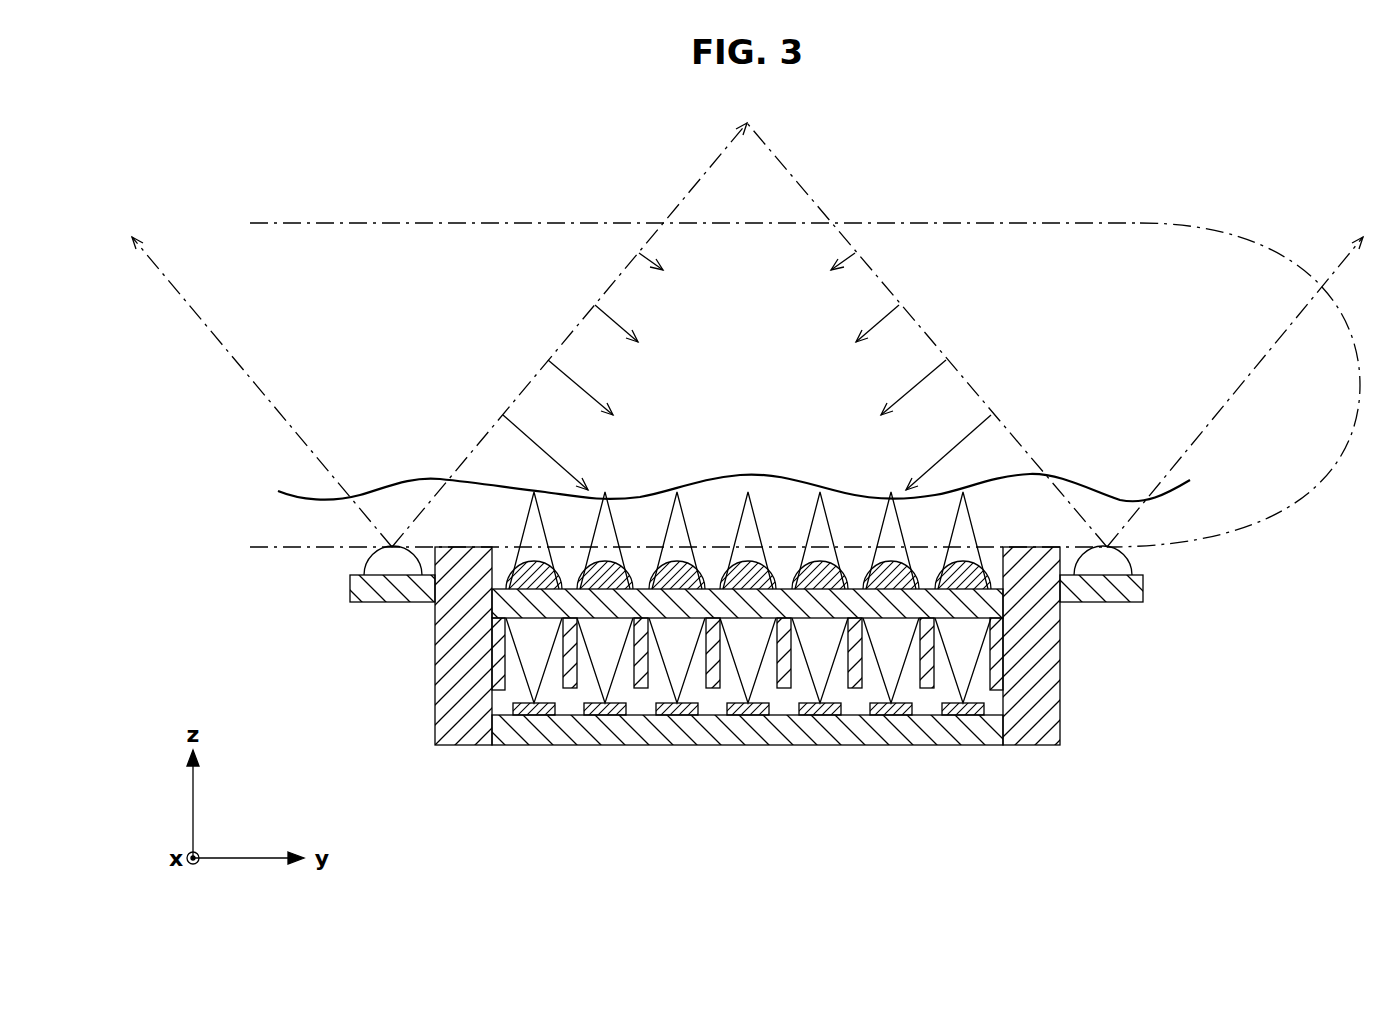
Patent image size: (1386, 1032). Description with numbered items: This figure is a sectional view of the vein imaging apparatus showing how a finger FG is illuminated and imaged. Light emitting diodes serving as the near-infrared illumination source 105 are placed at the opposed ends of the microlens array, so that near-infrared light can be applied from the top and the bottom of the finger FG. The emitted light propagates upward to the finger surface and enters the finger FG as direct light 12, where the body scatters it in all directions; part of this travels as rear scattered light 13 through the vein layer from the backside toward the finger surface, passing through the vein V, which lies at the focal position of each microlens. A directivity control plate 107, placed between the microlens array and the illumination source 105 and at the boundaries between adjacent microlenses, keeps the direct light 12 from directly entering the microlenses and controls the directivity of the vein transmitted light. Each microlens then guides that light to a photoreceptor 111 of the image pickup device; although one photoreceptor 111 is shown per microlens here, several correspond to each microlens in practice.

The direct light 12 is at (412, 265).
The rear scattered light 13 is at (750, 428).
The near-infrared illumination source 105 is at (390, 605).
The directivity control plate 107 is at (437, 730).
The photoreceptor 111 is at (535, 717).
The finger FG is at (930, 223).
The vein V is at (1062, 481).